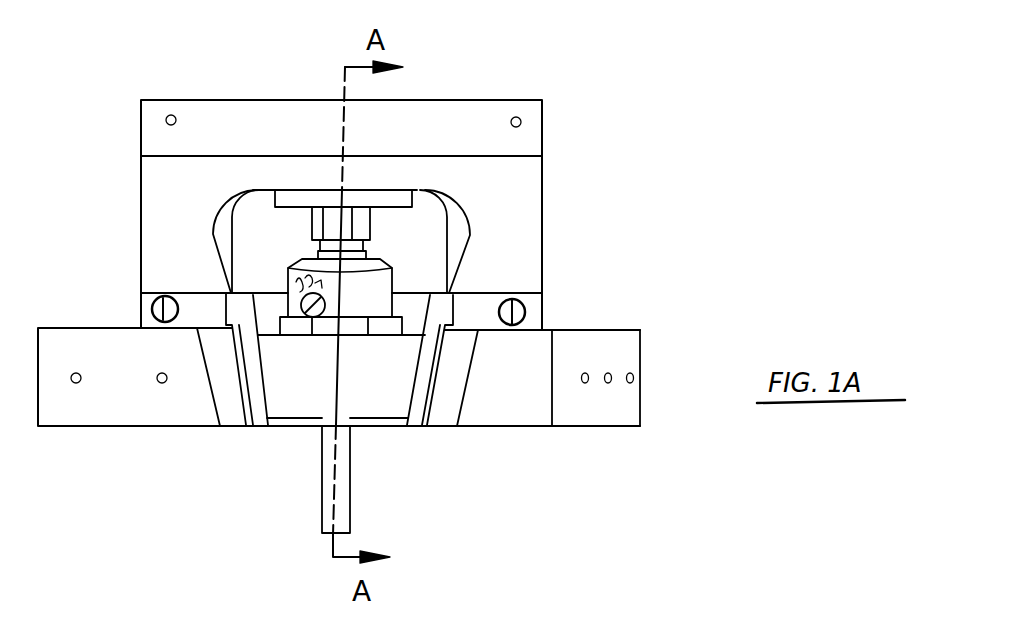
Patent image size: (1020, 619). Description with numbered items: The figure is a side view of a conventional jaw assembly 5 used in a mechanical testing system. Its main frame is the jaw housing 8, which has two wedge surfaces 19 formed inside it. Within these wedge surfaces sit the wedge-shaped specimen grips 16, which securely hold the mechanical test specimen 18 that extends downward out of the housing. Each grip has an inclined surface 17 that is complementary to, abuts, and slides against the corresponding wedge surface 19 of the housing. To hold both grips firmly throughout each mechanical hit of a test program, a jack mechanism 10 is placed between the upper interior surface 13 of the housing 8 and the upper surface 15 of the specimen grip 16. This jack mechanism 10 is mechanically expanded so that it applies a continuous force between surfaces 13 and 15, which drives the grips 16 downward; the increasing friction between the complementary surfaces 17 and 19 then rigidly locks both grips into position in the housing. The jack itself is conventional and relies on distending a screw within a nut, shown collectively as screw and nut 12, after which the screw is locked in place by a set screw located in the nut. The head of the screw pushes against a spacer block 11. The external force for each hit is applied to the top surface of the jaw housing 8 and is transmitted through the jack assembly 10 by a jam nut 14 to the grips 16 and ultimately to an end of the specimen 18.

The jaw assembly 5 is at (95, 222).
The jaw housing 8 is at (525, 188).
The jack mechanism 10 is at (319, 273).
The spacer block 11 is at (360, 197).
The screw and nut 12 is at (368, 222).
The upper interior surface 13 is at (413, 192).
The jam nut 14 is at (393, 327).
The upper surface 15 is at (327, 336).
The wedge-shaped specimen grips 16 is at (369, 401).
The inclined surface 17 is at (272, 384).
The mechanical test specimen 18 is at (345, 505).
The wedge surfaces 19 is at (270, 382).